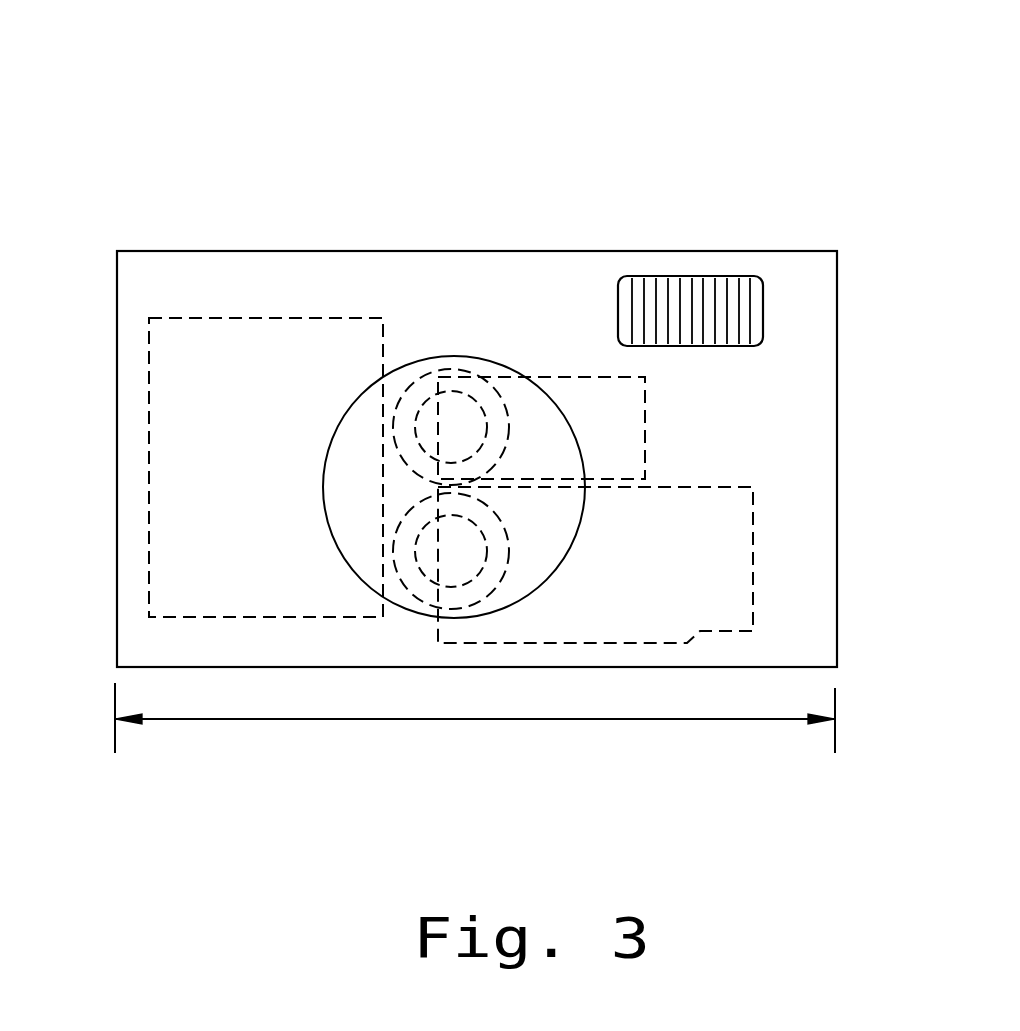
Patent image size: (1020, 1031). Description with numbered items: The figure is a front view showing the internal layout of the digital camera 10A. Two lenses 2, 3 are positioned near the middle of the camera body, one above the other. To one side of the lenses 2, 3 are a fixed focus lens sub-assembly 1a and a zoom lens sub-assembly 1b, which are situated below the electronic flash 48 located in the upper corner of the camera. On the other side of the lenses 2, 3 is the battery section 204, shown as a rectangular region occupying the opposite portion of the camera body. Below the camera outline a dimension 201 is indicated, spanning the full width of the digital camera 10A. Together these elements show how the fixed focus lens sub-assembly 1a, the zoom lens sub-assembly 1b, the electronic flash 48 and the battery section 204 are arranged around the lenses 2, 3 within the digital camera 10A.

The digital camera 10A is at (542, 111).
The electronic flash 48 is at (742, 305).
The lens 2 is at (484, 398).
The lens 3 is at (407, 580).
The fixed focus lens sub-assembly 1a is at (608, 427).
The zoom lens sub-assembly 1b is at (645, 573).
The battery section 204 is at (212, 503).
The housing width 201 is at (448, 720).